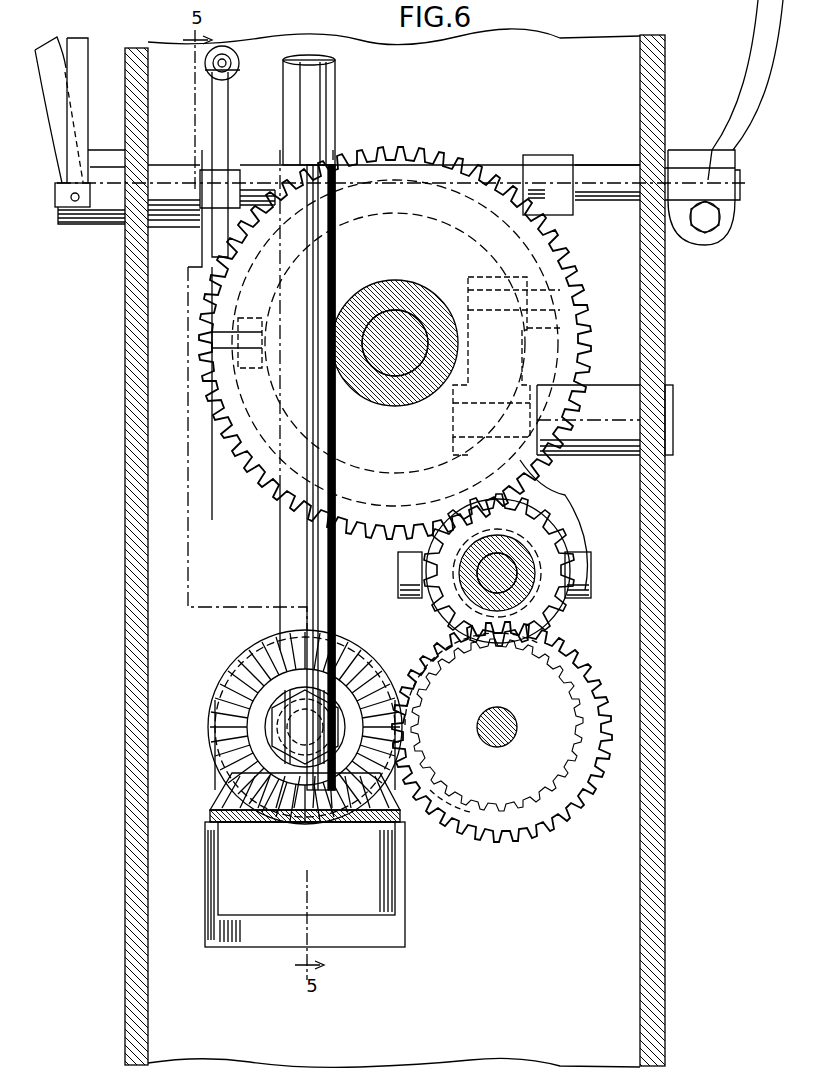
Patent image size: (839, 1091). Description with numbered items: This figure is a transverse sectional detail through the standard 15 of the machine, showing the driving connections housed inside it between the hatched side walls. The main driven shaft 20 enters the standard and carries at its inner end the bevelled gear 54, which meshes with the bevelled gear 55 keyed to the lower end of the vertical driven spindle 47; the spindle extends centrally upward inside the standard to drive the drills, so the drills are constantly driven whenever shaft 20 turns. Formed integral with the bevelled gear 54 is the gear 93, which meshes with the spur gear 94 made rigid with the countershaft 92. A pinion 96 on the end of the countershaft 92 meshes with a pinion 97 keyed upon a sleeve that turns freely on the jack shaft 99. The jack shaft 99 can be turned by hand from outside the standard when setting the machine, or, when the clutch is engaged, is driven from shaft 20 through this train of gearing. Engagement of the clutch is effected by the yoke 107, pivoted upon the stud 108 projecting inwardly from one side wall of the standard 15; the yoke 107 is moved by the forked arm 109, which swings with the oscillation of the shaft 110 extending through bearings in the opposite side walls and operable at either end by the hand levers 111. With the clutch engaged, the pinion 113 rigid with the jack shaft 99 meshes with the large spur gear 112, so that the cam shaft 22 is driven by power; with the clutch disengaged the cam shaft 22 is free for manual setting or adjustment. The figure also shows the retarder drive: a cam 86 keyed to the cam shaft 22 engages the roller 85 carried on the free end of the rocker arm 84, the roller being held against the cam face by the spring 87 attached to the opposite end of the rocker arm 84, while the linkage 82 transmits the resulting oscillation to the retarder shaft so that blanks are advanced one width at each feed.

The standard 15 is at (136, 403).
The main driven shaft 20 is at (206, 742).
The cam shaft 22 is at (392, 360).
The vertical driven spindle 47 is at (300, 560).
The bevelled gear 54 is at (222, 686).
The bevelled gear 55 is at (228, 797).
The linkage 82 is at (84, 78).
The rocker arm 84 is at (233, 150).
The roller 85 is at (262, 356).
The cam 86 is at (262, 442).
The spring 87 is at (240, 63).
The countershaft 92 is at (506, 742).
The gear 93 is at (368, 656).
The spur gear 94 is at (512, 840).
The pinion 96 is at (460, 812).
The pinion 97 is at (448, 697).
The jack shaft 99 is at (518, 565).
The yoke 107 is at (545, 528).
The stud 108 is at (442, 428).
The forked arm 109 is at (572, 228).
The shaft 110 is at (596, 172).
The hand lever 111 is at (55, 76).
The spur gear 112 is at (410, 153).
The pinion 113 is at (558, 606).